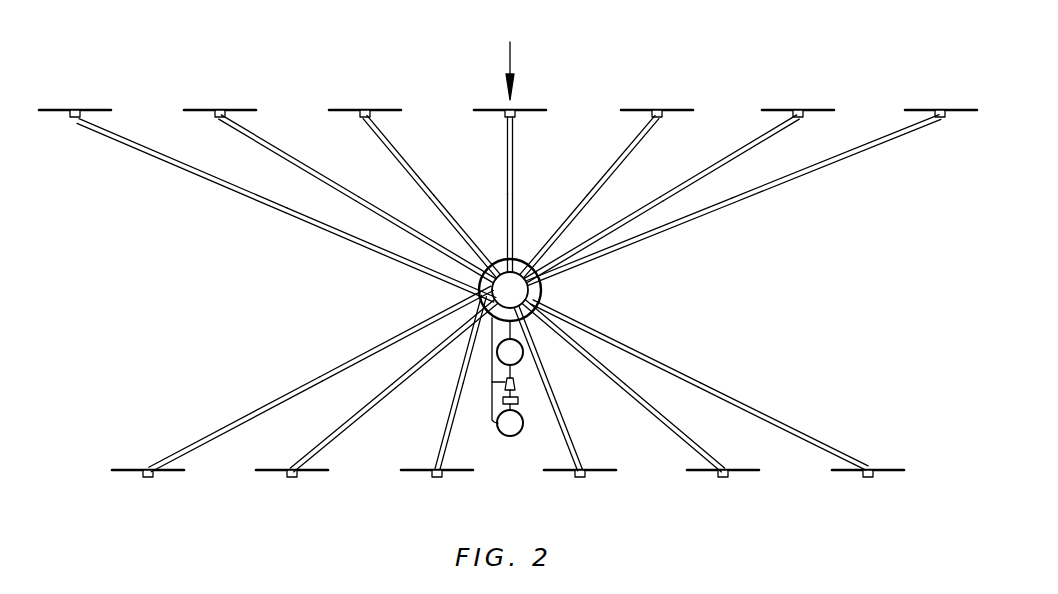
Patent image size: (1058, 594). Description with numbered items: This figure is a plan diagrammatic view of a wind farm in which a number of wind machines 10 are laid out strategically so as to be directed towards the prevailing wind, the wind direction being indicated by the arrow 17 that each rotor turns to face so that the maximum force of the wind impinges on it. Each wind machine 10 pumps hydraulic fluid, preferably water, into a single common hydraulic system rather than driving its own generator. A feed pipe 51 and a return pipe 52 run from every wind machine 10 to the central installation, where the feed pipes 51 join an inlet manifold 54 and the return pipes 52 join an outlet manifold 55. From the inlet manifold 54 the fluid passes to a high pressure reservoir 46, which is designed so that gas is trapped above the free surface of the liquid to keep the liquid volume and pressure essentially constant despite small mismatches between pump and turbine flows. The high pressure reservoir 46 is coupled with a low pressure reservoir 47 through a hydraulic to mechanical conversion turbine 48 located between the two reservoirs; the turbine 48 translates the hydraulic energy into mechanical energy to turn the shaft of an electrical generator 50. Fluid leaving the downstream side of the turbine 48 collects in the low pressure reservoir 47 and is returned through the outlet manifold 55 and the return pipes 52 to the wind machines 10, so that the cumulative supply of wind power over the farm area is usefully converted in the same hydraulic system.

The wind machine 10 is at (102, 109).
The arrow 17 is at (512, 52).
The high pressure reservoir 46 is at (521, 345).
The low pressure reservoir 47 is at (507, 437).
The turbine 48 is at (520, 384).
The electrical generator 50 is at (518, 400).
The feed pipe 51 is at (276, 147).
The return pipe 52 is at (253, 146).
The inlet manifold 54 is at (498, 258).
The outlet manifold 55 is at (522, 258).